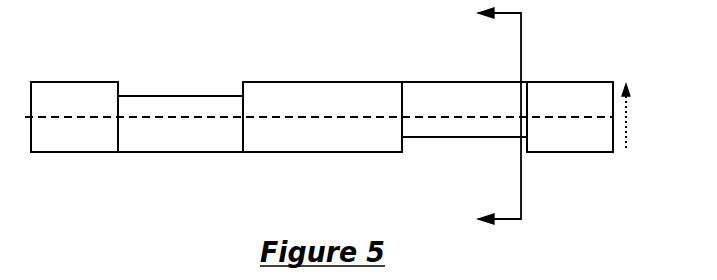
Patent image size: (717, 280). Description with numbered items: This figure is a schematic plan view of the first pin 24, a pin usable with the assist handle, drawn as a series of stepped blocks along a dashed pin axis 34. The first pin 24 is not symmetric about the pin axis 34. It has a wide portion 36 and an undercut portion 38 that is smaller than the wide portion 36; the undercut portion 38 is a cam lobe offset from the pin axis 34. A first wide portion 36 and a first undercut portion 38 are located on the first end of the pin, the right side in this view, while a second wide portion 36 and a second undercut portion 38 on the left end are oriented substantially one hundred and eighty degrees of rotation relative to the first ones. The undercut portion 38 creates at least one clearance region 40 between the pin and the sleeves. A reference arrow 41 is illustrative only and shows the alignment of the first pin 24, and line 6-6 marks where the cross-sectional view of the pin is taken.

The first pin 24 is at (70, 133).
The pin axis 34 is at (314, 123).
The wide portion 36 is at (219, 150).
The undercut portion 38 is at (182, 100).
The clearance region 40 is at (141, 89).
The reference arrow 41 is at (626, 100).
The line 6-6 is at (511, 222).